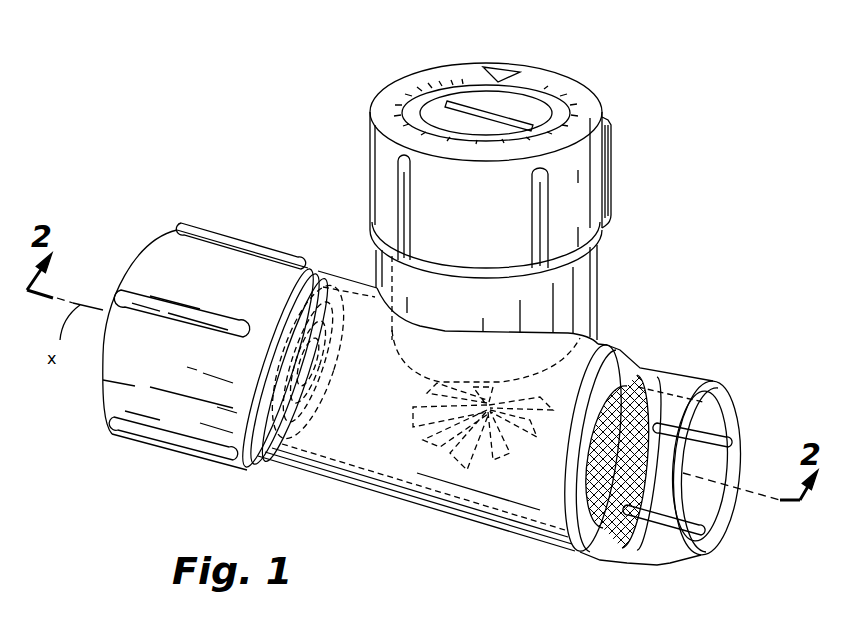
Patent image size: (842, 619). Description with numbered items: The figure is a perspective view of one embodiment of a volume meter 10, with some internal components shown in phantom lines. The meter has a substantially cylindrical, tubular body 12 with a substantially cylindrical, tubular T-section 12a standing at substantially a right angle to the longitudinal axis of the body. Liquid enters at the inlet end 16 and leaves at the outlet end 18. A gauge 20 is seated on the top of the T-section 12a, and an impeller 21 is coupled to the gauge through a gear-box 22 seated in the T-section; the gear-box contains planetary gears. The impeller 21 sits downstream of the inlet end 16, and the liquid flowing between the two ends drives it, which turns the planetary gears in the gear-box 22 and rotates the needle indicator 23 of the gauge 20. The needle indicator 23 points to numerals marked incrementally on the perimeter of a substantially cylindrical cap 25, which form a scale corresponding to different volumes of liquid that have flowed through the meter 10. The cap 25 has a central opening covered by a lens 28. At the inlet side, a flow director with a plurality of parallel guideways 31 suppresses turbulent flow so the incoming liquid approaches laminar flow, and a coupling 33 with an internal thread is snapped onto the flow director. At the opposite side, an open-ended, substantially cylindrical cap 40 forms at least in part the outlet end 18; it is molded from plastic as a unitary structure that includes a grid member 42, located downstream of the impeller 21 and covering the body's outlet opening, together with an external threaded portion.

The volume meter 10 is at (624, 88).
The tubular body 12 is at (353, 463).
The T-section 12a is at (592, 296).
The inlet end 16 is at (100, 390).
The outlet end 18 is at (698, 547).
The gauge 20 is at (615, 148).
The impeller 21 is at (482, 420).
The gear-box 22 is at (413, 385).
The needle indicator 23 is at (470, 100).
The cylindrical cap 25 is at (398, 131).
The lens 28 is at (512, 100).
The guideways 31 is at (312, 290).
The coupling 33 is at (178, 408).
The cylindrical cap 40 is at (738, 384).
The grid member 42 is at (680, 357).